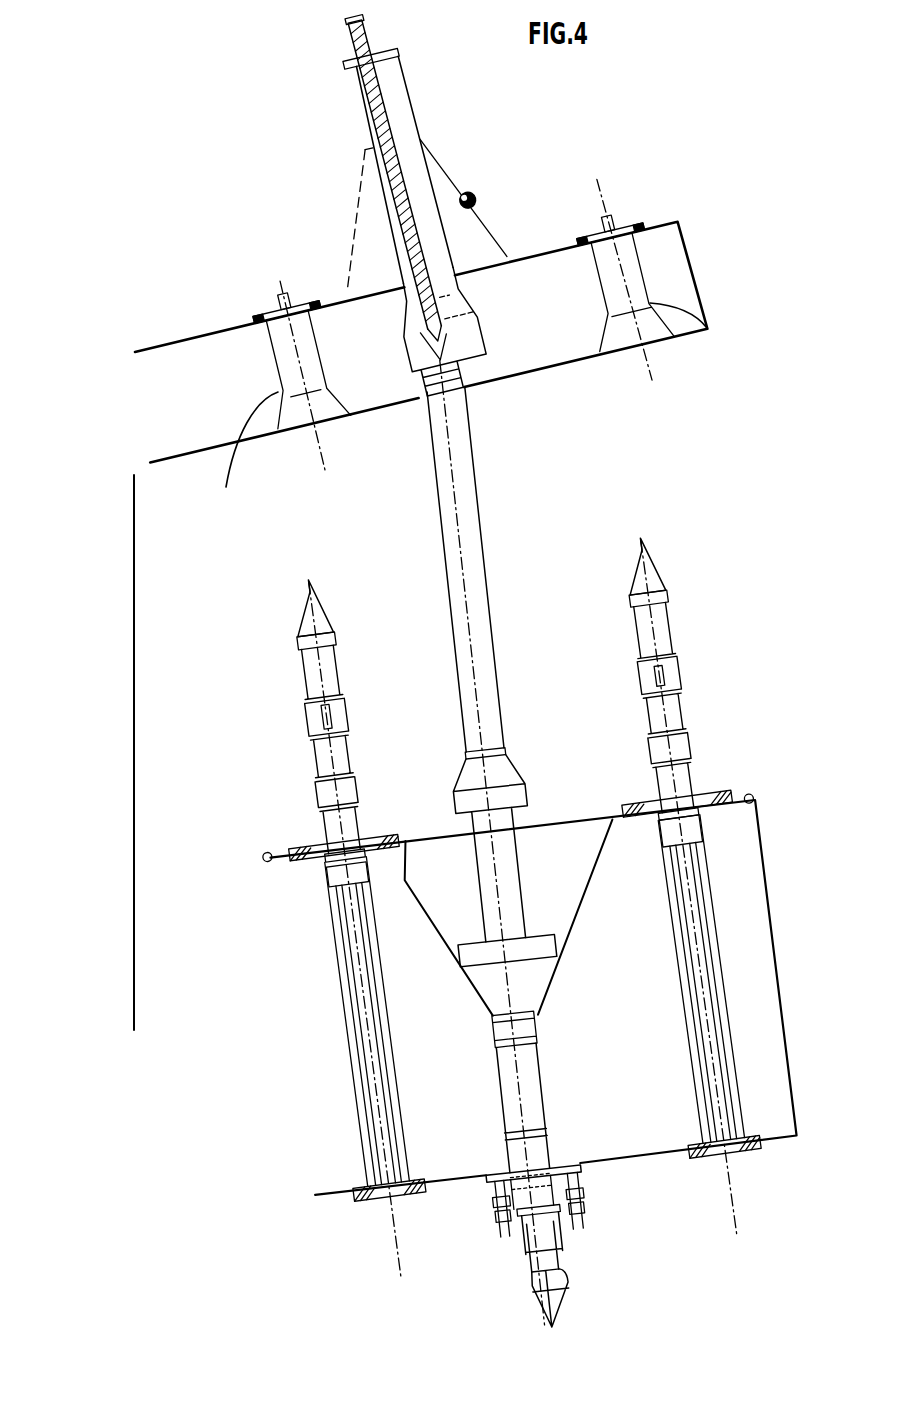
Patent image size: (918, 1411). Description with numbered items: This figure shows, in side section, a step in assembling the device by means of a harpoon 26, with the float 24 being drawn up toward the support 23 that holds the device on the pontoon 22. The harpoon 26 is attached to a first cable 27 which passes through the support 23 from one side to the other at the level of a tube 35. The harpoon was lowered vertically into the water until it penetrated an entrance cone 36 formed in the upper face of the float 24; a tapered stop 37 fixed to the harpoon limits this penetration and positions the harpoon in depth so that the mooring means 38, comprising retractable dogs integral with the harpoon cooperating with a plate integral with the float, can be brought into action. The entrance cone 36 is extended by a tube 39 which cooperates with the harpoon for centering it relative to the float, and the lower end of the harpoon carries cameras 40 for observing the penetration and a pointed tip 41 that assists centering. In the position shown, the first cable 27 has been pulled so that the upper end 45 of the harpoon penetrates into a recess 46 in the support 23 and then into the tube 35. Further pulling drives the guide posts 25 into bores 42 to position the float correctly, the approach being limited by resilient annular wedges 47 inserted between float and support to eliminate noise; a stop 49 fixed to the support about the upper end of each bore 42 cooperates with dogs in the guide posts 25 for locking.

The pontoon 22 is at (103, 790).
The support 23 is at (683, 283).
The float 24 is at (288, 970).
The guide posts 25 is at (322, 787).
The harpoon 26 is at (514, 701).
The first cable 27 is at (348, 25).
The tube 35 is at (360, 100).
The entrance cone 36 is at (583, 905).
The tapered stop 37 is at (528, 983).
The mooring means 38 is at (553, 1180).
The tube 39 is at (538, 1078).
The cameras 40 is at (555, 1215).
The pointed tip 41 is at (553, 1302).
The bores 42 is at (715, 346).
The upper end of the harpoon 45 is at (463, 462).
The recess 46 is at (483, 343).
The resilient annular wedges 47 is at (292, 838).
The stop 49 is at (260, 316).